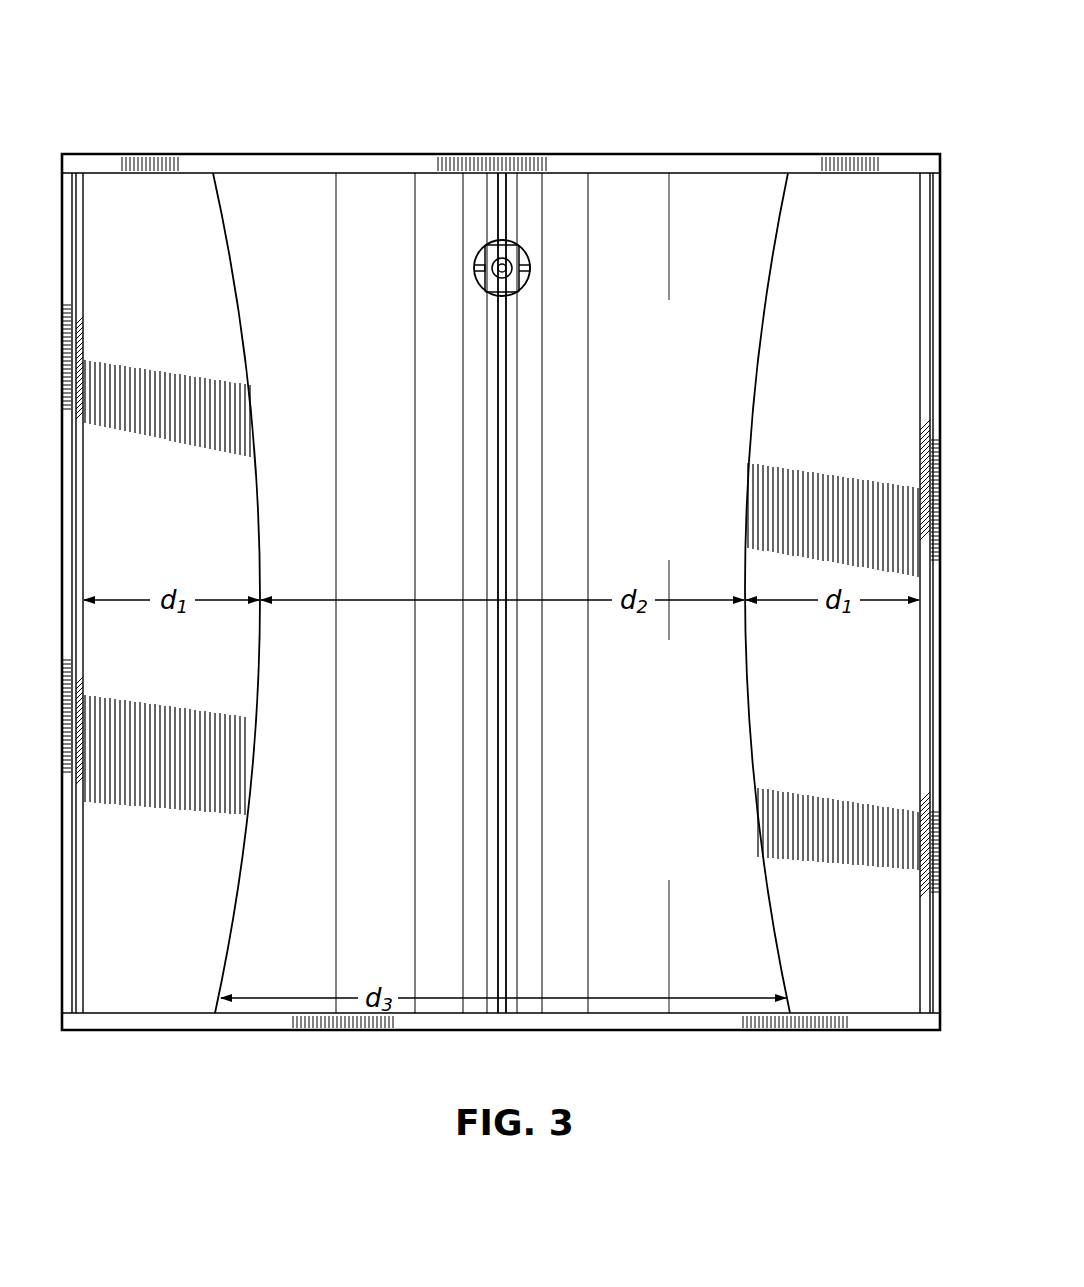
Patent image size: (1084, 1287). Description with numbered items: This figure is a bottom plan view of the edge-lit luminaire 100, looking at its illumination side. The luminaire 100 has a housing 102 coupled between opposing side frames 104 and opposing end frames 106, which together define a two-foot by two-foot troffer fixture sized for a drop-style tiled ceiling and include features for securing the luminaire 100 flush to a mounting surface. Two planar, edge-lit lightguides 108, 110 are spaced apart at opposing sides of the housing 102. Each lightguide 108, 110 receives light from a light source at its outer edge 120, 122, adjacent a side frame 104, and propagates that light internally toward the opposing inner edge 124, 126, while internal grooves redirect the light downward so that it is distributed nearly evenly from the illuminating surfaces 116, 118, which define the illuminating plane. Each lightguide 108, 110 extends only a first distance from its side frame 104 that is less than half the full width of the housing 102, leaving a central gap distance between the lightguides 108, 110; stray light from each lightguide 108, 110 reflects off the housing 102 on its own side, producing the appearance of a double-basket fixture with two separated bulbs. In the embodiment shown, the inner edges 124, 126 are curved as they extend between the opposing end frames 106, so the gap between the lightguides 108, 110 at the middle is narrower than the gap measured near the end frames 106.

The luminaire 100 is at (868, 27).
The housing 102 is at (643, 240).
The side frames 104 is at (62, 968).
The end frames 106 is at (372, 153).
The lightguide 108 is at (833, 252).
The lightguide 110 is at (143, 253).
The illuminating surface 116 is at (172, 483).
The illuminating surface 118 is at (854, 344).
The outer edge 120 is at (84, 650).
The outer edge 122 is at (920, 716).
The inner edge 124 is at (745, 705).
The inner edge 126 is at (258, 688).